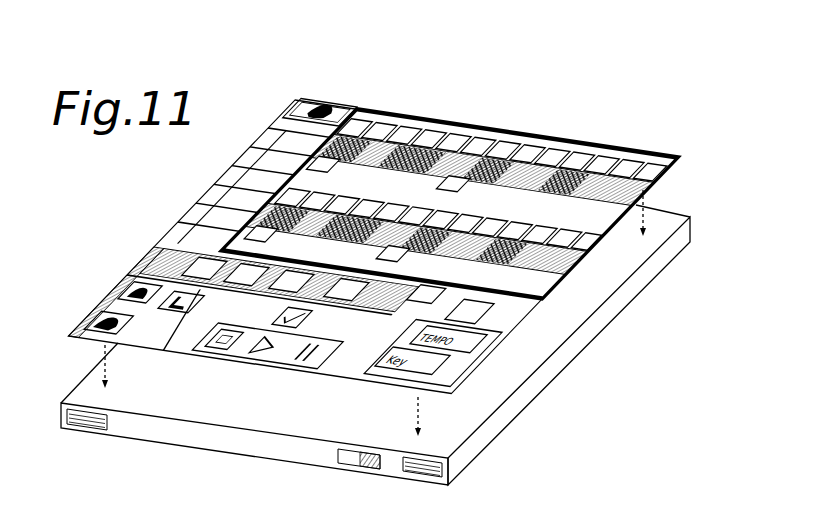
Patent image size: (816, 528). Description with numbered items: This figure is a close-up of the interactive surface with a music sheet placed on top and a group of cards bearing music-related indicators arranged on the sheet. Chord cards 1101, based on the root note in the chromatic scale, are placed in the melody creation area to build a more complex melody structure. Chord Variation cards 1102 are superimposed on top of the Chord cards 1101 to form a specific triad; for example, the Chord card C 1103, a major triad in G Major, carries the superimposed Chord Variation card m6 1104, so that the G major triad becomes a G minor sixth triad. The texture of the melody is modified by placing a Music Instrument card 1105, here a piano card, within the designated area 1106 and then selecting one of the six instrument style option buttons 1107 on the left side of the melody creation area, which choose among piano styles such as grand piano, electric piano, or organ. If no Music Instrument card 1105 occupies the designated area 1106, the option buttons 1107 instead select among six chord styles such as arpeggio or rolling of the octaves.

The Chord cards 1101 is at (434, 212).
The Chord Variation cards 1102 is at (254, 180).
The Chord card C 1103 is at (352, 258).
The Chord Variation card m6 1104 is at (332, 262).
The Music Instrument card 1105 is at (322, 100).
The designated area 1106 is at (318, 126).
The instrument style option buttons 1107 is at (214, 195).